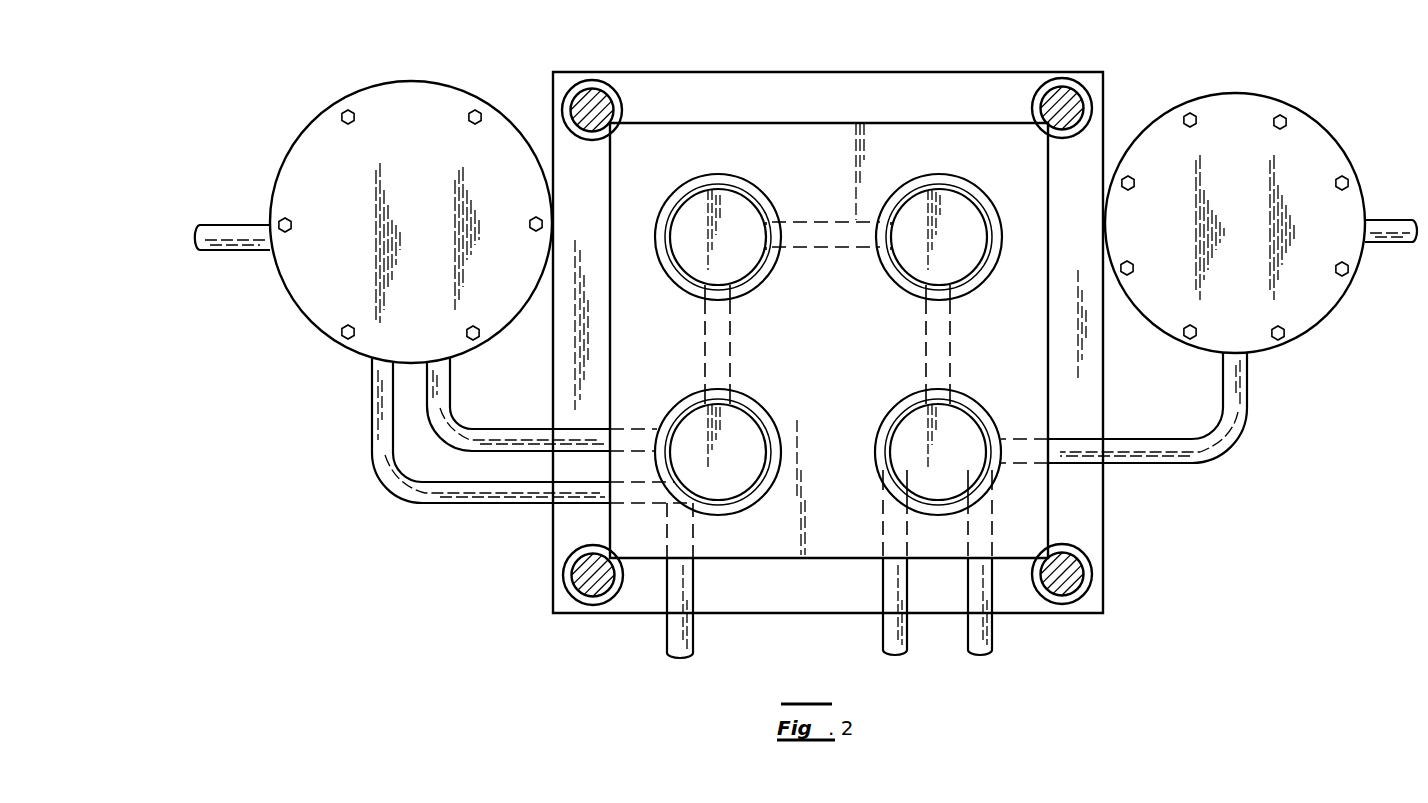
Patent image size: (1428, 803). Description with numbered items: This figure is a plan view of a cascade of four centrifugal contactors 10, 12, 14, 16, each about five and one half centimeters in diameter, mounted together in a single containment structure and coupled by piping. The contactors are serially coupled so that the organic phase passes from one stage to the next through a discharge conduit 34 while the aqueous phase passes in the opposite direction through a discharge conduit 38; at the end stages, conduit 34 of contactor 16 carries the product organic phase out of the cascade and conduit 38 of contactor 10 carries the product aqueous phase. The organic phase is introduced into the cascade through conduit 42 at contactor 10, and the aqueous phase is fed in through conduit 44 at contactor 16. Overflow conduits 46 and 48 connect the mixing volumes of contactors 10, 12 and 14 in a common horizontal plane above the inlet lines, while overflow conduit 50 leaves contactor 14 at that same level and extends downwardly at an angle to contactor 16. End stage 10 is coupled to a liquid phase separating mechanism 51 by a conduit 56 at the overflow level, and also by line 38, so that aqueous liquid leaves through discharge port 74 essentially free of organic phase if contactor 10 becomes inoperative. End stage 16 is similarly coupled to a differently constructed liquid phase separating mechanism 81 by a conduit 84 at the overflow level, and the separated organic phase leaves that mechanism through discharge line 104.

The centrifugal contactor 10 is at (775, 405).
The centrifugal contactor 12 is at (752, 176).
The centrifugal contactor 14 is at (975, 176).
The centrifugal contactor 16 is at (992, 402).
The discharge conduit 34 is at (990, 632).
The discharge conduit 38 is at (503, 506).
The conduit 42 is at (697, 632).
The conduit 44 is at (888, 633).
The overflow conduit 46 is at (733, 341).
The overflow conduit 48 is at (813, 222).
The overflow conduit 50 is at (953, 341).
The liquid phase separating mechanism 51 is at (436, 82).
The conduit 56 is at (506, 429).
The discharge port 74 is at (220, 225).
The liquid phase separating mechanism 81 is at (1277, 96).
The conduit 84 is at (1143, 439).
The discharge line 104 is at (1395, 243).